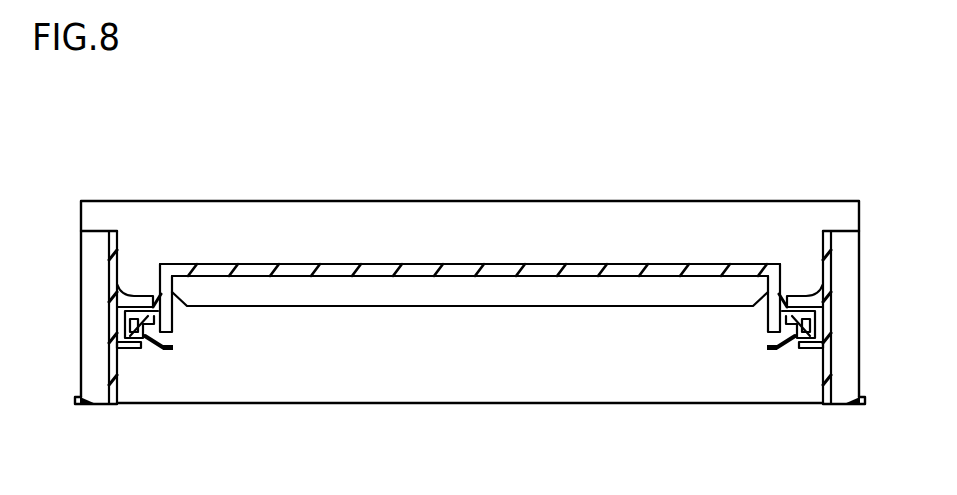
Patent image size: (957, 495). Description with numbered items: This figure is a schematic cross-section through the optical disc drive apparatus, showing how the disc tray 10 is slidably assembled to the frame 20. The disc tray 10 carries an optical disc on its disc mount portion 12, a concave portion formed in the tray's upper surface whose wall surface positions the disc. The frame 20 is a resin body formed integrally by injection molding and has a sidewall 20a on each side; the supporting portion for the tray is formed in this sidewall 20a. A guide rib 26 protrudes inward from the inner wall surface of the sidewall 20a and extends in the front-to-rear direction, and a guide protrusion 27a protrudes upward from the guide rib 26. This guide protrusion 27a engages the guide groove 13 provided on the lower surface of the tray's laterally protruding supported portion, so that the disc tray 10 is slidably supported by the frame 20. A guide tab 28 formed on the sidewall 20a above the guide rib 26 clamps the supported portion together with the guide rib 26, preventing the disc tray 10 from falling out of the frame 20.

The disc tray 10 is at (593, 250).
The disc mount portion 12 is at (362, 292).
The guide groove 13 is at (134, 318).
The frame 20 is at (695, 190).
The sidewall 20a is at (112, 278).
The guide rib 26 is at (168, 348).
The guide protrusion 27a is at (146, 345).
The guide tab 28 is at (137, 296).